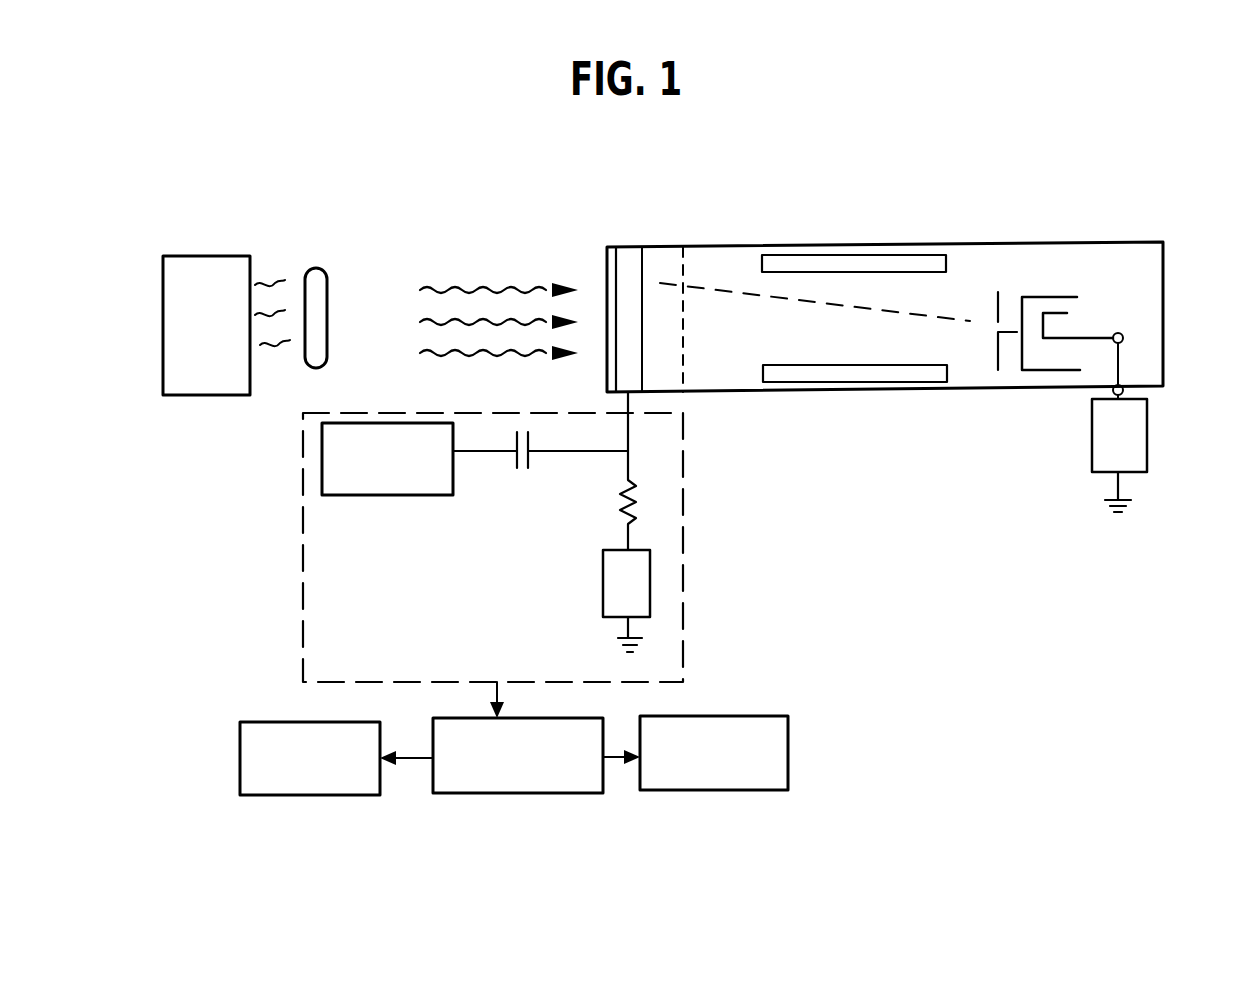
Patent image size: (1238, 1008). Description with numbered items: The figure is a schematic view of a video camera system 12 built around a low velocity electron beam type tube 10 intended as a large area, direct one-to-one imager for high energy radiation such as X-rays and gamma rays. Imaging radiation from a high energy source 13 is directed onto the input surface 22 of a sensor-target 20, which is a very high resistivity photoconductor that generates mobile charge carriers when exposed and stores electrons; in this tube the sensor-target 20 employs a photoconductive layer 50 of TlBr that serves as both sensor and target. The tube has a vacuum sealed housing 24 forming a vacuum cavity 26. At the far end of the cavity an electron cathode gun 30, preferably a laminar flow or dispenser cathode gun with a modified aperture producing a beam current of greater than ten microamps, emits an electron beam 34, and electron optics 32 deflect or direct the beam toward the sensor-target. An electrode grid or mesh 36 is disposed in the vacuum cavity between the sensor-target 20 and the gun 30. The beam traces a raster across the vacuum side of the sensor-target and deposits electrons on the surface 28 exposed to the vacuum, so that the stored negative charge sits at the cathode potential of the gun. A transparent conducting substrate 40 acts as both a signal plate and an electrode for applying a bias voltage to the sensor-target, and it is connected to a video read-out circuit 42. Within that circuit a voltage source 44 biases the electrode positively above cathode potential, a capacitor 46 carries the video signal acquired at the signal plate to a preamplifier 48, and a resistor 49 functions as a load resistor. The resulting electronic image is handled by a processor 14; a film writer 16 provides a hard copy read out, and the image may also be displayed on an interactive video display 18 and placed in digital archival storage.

The low velocity electron beam type tube 10 is at (998, 242).
The video camera system 12 is at (795, 472).
The high energy source 13 is at (205, 256).
The processor 14 is at (534, 794).
The film writer 16 is at (705, 791).
The interactive video display 18 is at (292, 796).
The sensor-target 20 is at (607, 246).
The input surface 22 is at (633, 281).
The vacuum sealed housing 24 is at (966, 390).
The vacuum cavity 26 is at (794, 343).
The surface exposed to the vacuum 28 is at (645, 262).
The electron cathode gun 30 is at (1096, 338).
The electron optics 32 is at (862, 255).
The electron beam 34 is at (960, 320).
The electrode grid or mesh 36 is at (683, 272).
The transparent conducting substrate 40 is at (612, 372).
The video read-out circuit 42 is at (683, 588).
The voltage source 44 is at (603, 588).
The capacitor 46 is at (525, 470).
The preamplifier 48 is at (385, 496).
The resistor 49 is at (621, 478).
The photoconductive layer 50 is at (632, 347).